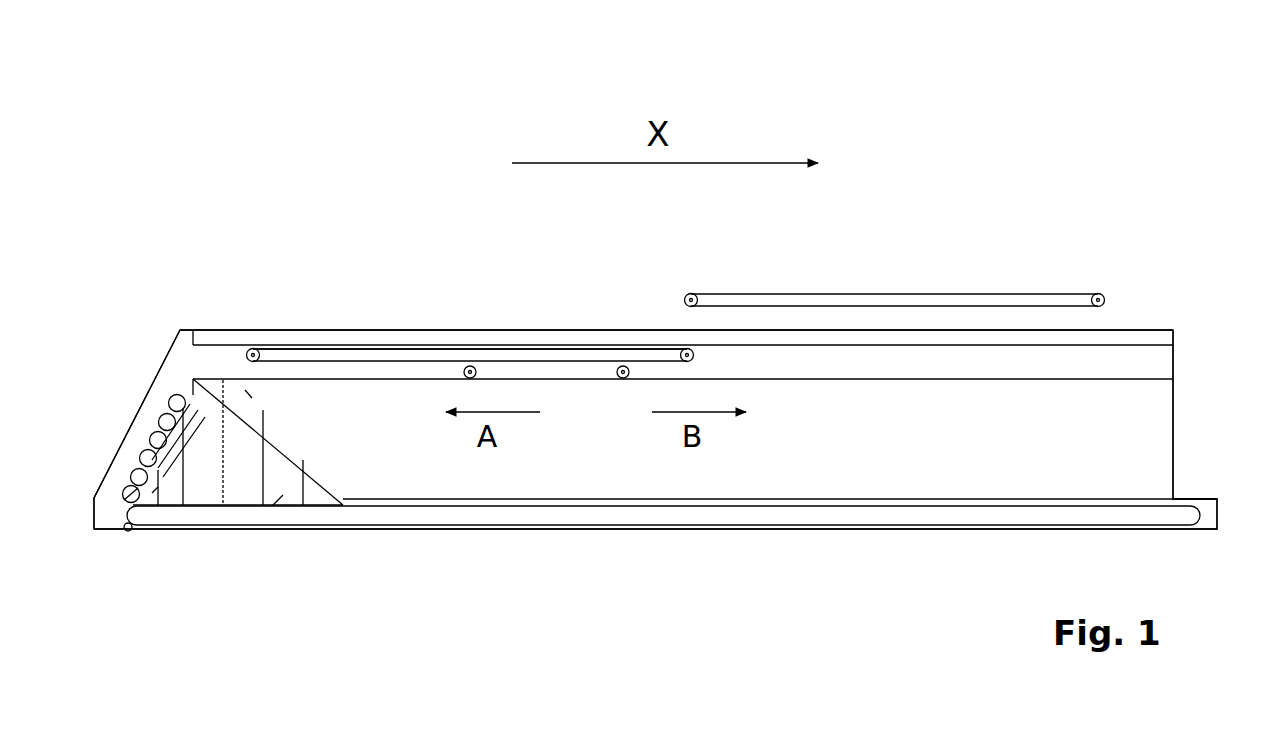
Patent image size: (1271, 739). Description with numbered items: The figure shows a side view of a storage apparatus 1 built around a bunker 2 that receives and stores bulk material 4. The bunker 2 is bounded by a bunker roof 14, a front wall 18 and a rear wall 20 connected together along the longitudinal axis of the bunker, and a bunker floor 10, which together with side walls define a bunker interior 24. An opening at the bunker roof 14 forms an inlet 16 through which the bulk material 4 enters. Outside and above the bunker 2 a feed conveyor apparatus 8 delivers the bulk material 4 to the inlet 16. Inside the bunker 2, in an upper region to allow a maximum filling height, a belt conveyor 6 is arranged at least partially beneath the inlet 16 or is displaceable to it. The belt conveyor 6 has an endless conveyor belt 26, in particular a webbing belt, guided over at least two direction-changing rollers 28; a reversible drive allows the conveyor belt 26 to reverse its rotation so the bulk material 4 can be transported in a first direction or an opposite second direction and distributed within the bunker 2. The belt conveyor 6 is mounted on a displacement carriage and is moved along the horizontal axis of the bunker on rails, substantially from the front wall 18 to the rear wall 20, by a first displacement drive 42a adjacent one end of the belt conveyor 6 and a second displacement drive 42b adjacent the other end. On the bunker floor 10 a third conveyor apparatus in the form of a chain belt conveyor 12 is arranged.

The storage apparatus 1 is at (156, 166).
The bunker 2 is at (180, 354).
The bulk material 4 is at (243, 477).
The belt conveyor 6 is at (429, 350).
The feed conveyor apparatus 8 is at (957, 294).
The bunker floor 10 is at (333, 530).
The chain belt conveyor 12 is at (459, 522).
The bunker roof 14 is at (517, 330).
The inlet 16 is at (653, 320).
The front wall 18 is at (135, 417).
The rear wall 20 is at (1175, 422).
The bunker interior 24 is at (889, 463).
The conveyor belt 26 is at (328, 347).
The direction-changing rollers 28 is at (253, 348).
The first displacement drive 42a is at (317, 378).
The second displacement drive 42b is at (623, 380).